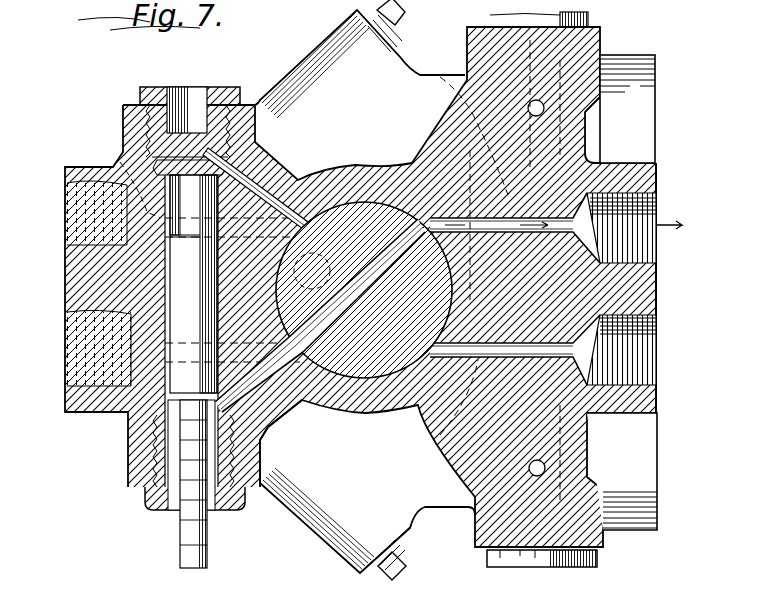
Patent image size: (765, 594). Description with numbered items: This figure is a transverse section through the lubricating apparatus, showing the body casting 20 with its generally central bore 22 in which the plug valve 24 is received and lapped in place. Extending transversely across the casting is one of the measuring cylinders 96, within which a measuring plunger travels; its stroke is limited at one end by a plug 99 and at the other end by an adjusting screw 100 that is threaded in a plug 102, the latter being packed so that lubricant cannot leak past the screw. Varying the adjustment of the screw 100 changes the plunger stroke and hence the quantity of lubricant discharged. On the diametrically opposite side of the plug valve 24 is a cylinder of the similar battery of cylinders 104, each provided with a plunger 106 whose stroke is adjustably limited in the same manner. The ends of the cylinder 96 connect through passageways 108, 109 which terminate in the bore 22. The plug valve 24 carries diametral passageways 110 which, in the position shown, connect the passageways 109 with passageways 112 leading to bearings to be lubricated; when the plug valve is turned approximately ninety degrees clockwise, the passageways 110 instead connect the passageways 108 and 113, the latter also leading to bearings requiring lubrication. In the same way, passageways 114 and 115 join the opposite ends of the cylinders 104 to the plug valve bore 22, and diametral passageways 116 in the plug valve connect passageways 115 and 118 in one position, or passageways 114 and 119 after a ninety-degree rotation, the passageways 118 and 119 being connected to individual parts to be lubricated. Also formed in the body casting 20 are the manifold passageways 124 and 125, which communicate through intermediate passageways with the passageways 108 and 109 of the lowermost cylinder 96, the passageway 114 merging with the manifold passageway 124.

The body casting 20 is at (654, 270).
The central bore 22 is at (358, 200).
The plug valve 24 is at (326, 200).
The cylinder 96 is at (170, 298).
The plug 99 is at (140, 87).
The adjusting screw 100 is at (182, 528).
The plug 102 is at (229, 510).
The cylinders 104 is at (604, 161).
The plunger 106 is at (514, 179).
The passageway 108 is at (284, 163).
The passageway 109 is at (265, 430).
The diametral passageways 110 is at (372, 290).
The passageways 112 is at (492, 236).
The passageways 113 is at (506, 313).
The passageway 114 is at (440, 80).
The passageway 115 is at (445, 495).
The diametral passageways 116 is at (308, 271).
The passageways 118 is at (119, 164).
The passageways 119 is at (128, 425).
The manifold passageway 124 is at (588, 110).
The manifold passageway 125 is at (545, 470).